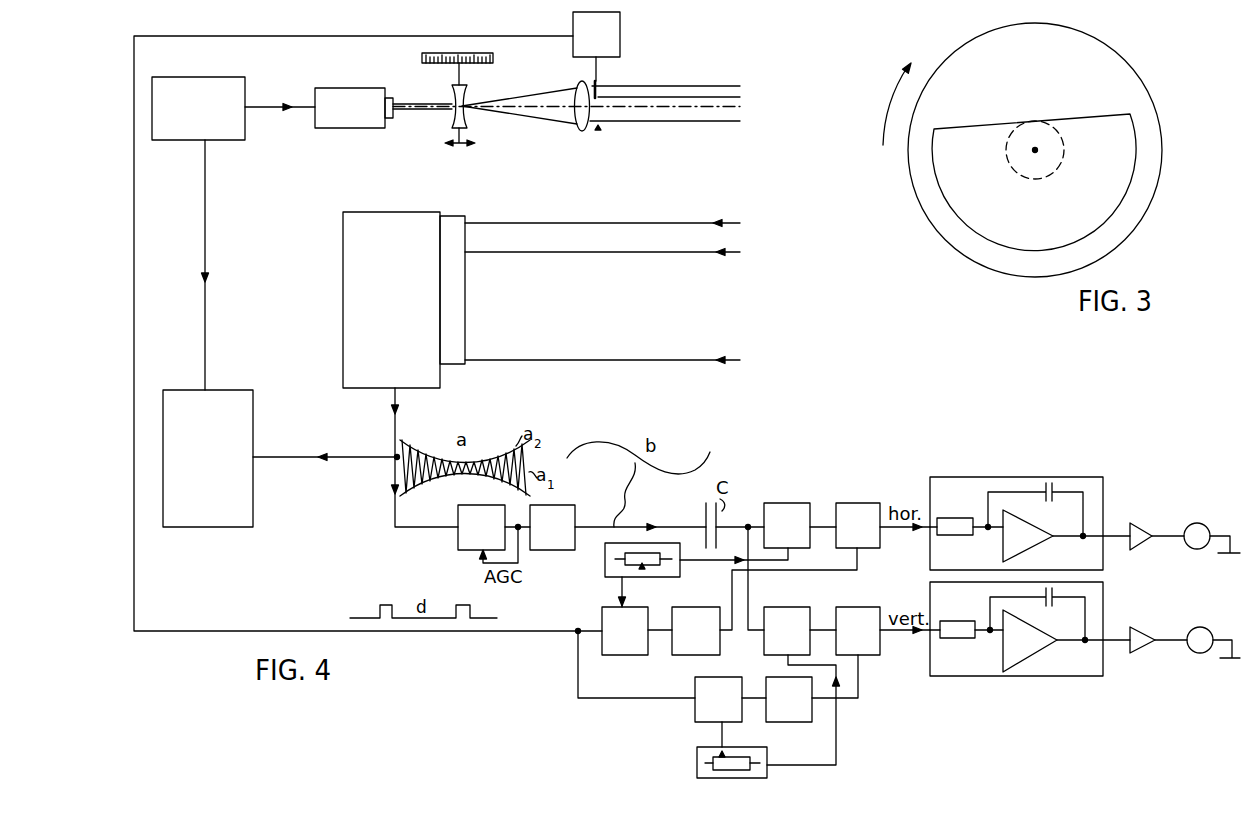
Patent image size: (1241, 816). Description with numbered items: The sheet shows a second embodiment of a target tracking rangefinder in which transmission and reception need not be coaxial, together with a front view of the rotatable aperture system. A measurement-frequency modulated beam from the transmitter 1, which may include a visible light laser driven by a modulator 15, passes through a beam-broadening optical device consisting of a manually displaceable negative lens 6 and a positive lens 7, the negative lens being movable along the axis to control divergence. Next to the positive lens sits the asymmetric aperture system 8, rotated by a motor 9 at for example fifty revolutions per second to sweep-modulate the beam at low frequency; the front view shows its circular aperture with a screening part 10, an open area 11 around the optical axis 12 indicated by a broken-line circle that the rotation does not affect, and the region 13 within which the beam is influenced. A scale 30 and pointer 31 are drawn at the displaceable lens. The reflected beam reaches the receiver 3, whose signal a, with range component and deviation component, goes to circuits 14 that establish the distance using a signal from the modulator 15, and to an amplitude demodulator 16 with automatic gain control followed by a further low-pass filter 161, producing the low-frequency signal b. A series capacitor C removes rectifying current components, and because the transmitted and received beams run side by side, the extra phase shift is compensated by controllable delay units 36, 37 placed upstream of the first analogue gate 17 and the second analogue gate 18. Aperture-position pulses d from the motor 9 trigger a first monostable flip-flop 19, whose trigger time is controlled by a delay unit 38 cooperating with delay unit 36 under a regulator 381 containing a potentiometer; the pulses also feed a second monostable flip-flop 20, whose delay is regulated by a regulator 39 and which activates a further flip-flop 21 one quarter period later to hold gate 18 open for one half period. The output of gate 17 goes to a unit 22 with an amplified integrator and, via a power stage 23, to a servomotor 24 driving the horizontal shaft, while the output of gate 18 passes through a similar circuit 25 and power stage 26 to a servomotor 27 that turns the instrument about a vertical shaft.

In FIG. 4, the transmitter 1 is at (317, 97).
In FIG. 4, the receiver 3 is at (343, 296).
In FIG. 4, the negative lens 6 is at (468, 122).
In FIG. 4, the positive lens 7 is at (578, 86).
In FIG. 4, the aperture system 8 is at (598, 85).
In FIG. 3, the aperture system 8 is at (1137, 72).
In FIG. 4, the motor 9 is at (620, 38).
In FIG. 3, the screening part 10 is at (961, 70).
In FIG. 3, the open area 11 is at (1063, 148).
In FIG. 4, the optical axis 12 is at (621, 112).
In FIG. 3, the optical axis 12 is at (1036, 151).
In FIG. 3, the aperture region 13 is at (1102, 207).
In FIG. 4, the distance establishing circuits 14 is at (254, 406).
In FIG. 4, the modulator 15 is at (245, 104).
In FIG. 4, the amplitude demodulator 16 is at (458, 549).
In FIG. 4, the low-pass filter 161 is at (549, 556).
In FIG. 4, the first analogue gate 17 is at (828, 505).
In FIG. 4, the second analogue gate 18 is at (863, 608).
In FIG. 4, the first monostable flip-flop 19 is at (694, 607).
In FIG. 4, the second monostable flip-flop 20 is at (695, 678).
In FIG. 4, the further monostable flip-flop 21 is at (770, 677).
In FIG. 4, the signal processing unit 22 is at (930, 477).
In FIG. 4, the power stage 23 is at (1127, 525).
In FIG. 4, the servomotor 24 is at (1186, 525).
In FIG. 4, the signal processing circuit 25 is at (1104, 676).
In FIG. 4, the power stage 26 is at (1160, 620).
In FIG. 4, the servomotor 27 is at (1205, 620).
In FIG. 4, the scale 30 is at (493, 57).
In FIG. 4, the pointer 31 is at (463, 80).
In FIG. 4, the controllable delay unit 36 is at (748, 508).
In FIG. 4, the controllable delay unit 37 is at (803, 608).
In FIG. 4, the delay unit 38 is at (602, 624).
In FIG. 4, the regulator 381 is at (616, 578).
In FIG. 4, the regulator 39 is at (697, 748).